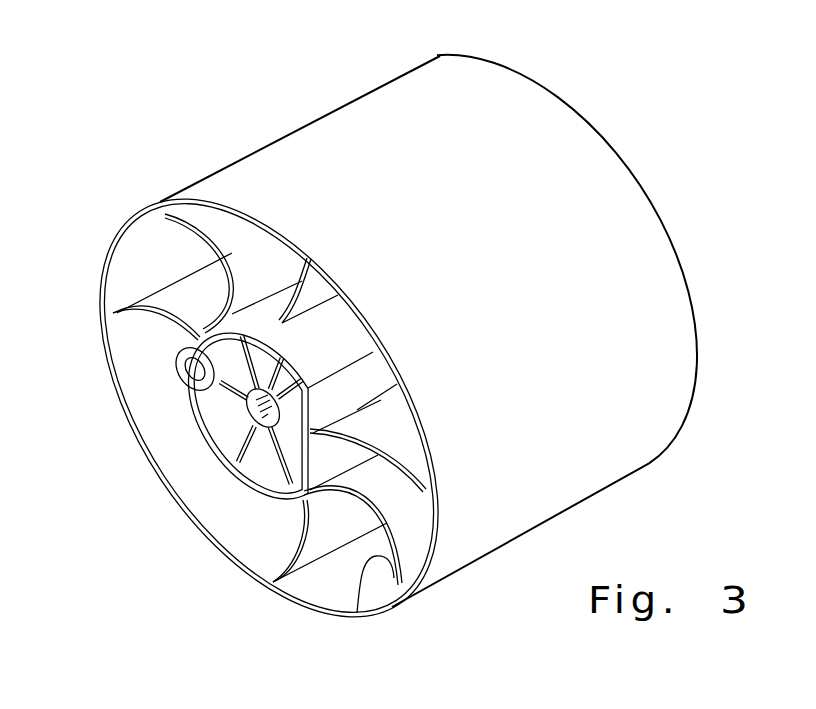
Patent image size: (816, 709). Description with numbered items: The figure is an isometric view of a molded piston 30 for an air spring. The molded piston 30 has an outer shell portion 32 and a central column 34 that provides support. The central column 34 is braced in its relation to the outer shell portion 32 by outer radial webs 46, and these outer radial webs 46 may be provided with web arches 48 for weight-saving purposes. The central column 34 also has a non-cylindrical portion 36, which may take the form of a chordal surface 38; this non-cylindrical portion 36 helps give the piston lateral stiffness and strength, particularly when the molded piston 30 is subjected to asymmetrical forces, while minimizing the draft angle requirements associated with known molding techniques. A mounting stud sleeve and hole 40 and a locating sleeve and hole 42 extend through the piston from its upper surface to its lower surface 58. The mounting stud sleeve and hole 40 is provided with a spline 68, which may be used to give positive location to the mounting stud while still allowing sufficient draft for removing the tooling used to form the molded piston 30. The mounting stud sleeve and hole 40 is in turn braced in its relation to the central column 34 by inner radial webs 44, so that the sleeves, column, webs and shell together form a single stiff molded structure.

The molded piston 30 is at (559, 118).
The outer shell portion 32 is at (605, 190).
The central column 34 is at (235, 437).
The non-cylindrical portion 36 is at (333, 460).
The chordal surface 38 is at (330, 397).
The mounting stud sleeve and hole 40 is at (215, 420).
The locating sleeve and hole 42 is at (180, 377).
The inner radial webs 44 is at (257, 487).
The outer radial webs 46 is at (317, 553).
The web arches 48 is at (367, 563).
The lower surface 58 is at (108, 253).
The spline 68 is at (268, 393).